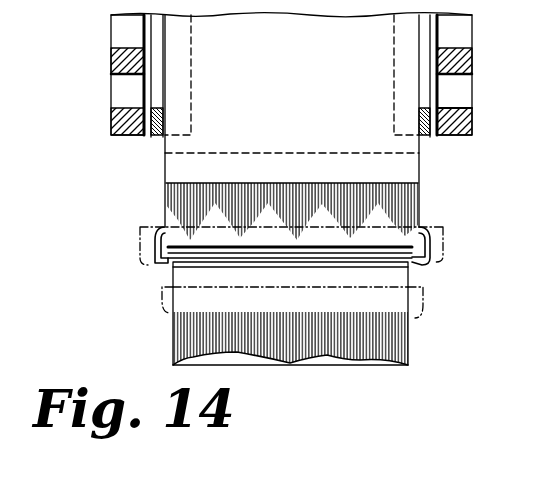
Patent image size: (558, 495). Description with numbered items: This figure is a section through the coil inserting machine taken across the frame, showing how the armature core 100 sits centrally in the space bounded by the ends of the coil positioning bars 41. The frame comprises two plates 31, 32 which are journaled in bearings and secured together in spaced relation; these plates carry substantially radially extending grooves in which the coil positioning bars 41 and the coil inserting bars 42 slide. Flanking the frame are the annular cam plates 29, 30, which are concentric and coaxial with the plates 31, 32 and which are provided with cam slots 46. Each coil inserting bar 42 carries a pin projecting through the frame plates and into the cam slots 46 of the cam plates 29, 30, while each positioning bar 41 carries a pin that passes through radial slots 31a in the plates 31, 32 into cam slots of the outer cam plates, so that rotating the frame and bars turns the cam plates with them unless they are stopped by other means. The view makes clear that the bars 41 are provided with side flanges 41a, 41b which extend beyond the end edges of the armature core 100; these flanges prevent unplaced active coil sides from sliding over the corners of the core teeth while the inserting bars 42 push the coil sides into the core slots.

The annular cam plate 29 is at (118, 123).
The annular cam plate 30 is at (428, 117).
The plate 31 is at (157, 137).
The radial slot 31a is at (158, 87).
The plate 32 is at (477, 108).
The coil positioning bar 41 is at (407, 207).
The side flange 41a is at (160, 268).
The side flange 41b is at (423, 266).
The coil inserting bar 42 is at (363, 138).
The cam slot 46 is at (125, 108).
The armature core 100 is at (427, 335).